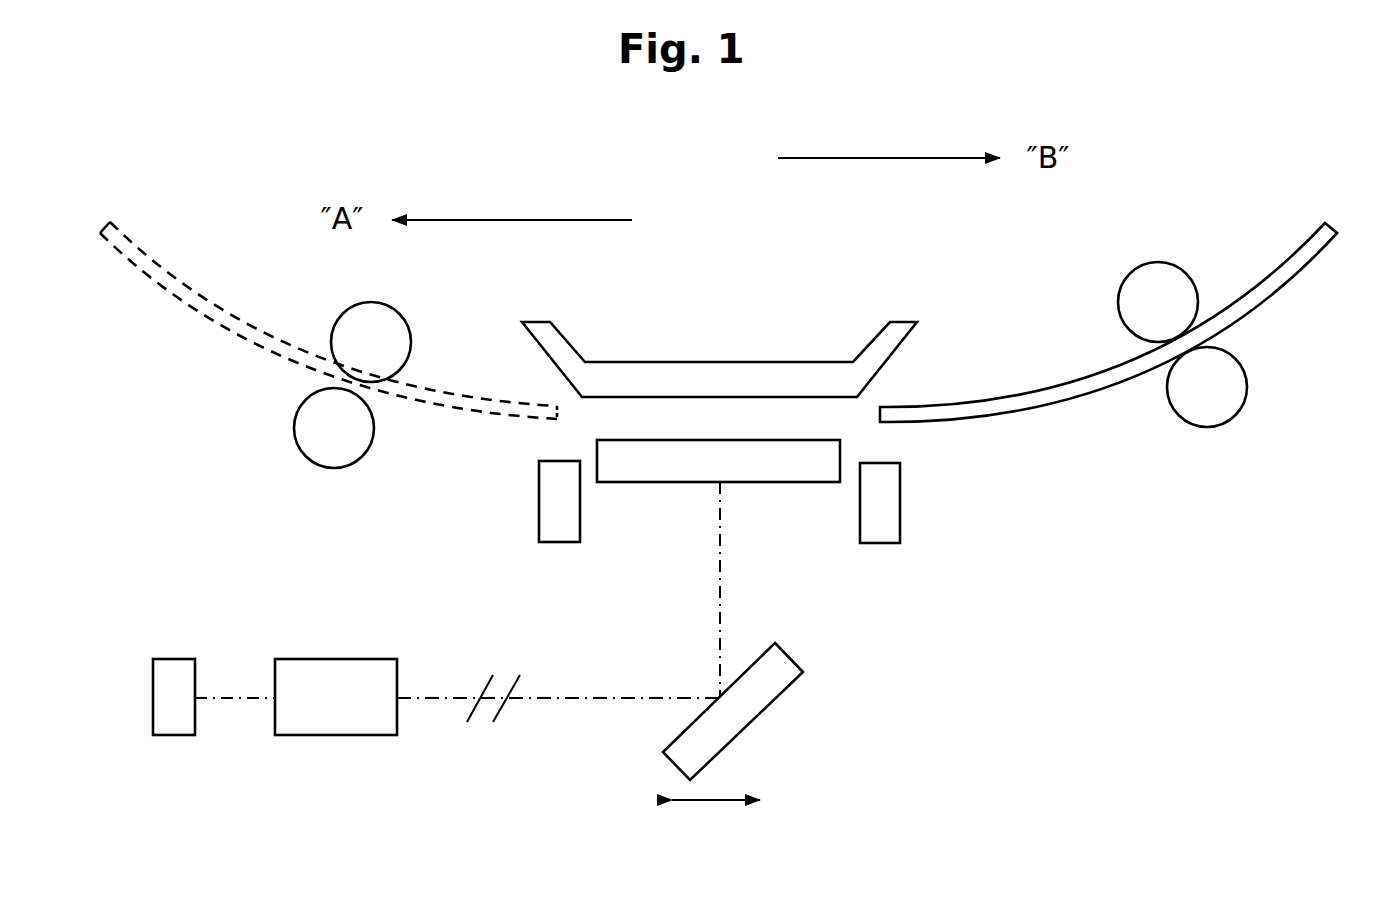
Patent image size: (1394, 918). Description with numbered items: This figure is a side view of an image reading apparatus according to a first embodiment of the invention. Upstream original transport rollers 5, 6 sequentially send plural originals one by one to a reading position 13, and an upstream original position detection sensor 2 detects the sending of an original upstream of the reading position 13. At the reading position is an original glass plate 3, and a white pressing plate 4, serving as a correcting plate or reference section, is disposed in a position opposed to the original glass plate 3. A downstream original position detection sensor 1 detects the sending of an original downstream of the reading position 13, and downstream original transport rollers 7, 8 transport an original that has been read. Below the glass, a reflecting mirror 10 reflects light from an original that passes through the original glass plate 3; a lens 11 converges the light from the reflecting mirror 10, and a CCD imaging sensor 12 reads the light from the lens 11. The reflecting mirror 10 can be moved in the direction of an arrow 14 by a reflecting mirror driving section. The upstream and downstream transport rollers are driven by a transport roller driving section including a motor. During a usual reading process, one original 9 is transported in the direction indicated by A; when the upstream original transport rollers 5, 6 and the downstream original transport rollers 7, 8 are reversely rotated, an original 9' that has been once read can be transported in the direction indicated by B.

The downstream original position detection sensor 1 is at (545, 510).
The upstream original position detection sensor 2 is at (900, 501).
The original glass plate 3 is at (650, 483).
The white pressing plate 4 is at (790, 362).
The upstream original transport roller 5 is at (1172, 263).
The upstream original transport roller 6 is at (1247, 397).
The downstream original transport roller 7 is at (340, 316).
The downstream original transport roller 8 is at (294, 422).
The original 9 is at (1133, 322).
The original 9' is at (328, 306).
The reflecting mirror 10 is at (783, 690).
The lens 11 is at (345, 736).
The CCD imaging sensor 12 is at (168, 738).
The reading position 13 is at (727, 488).
The arrow 14 is at (728, 801).